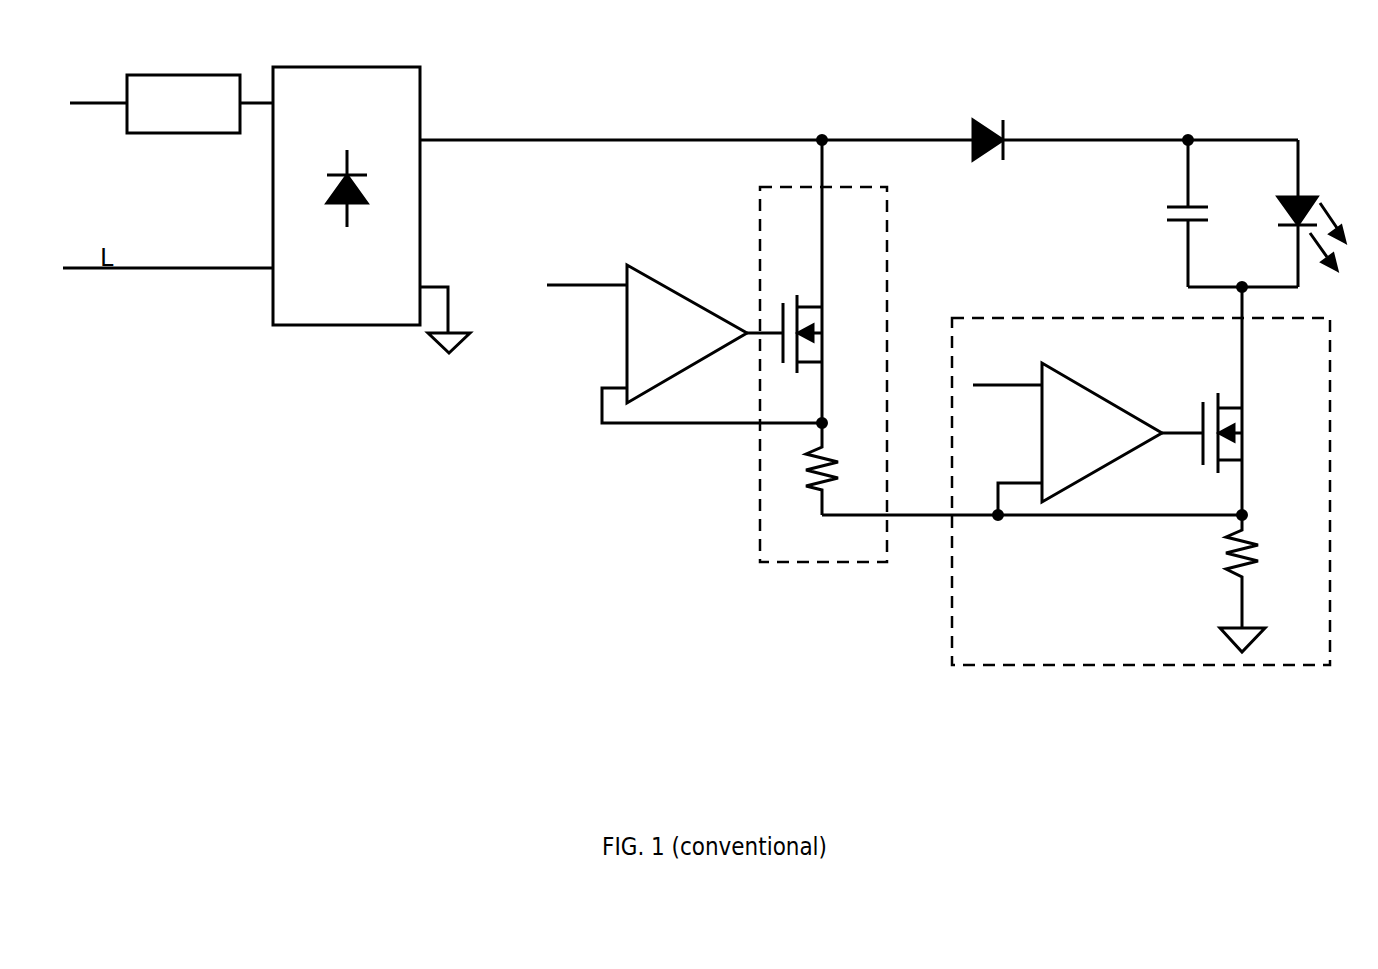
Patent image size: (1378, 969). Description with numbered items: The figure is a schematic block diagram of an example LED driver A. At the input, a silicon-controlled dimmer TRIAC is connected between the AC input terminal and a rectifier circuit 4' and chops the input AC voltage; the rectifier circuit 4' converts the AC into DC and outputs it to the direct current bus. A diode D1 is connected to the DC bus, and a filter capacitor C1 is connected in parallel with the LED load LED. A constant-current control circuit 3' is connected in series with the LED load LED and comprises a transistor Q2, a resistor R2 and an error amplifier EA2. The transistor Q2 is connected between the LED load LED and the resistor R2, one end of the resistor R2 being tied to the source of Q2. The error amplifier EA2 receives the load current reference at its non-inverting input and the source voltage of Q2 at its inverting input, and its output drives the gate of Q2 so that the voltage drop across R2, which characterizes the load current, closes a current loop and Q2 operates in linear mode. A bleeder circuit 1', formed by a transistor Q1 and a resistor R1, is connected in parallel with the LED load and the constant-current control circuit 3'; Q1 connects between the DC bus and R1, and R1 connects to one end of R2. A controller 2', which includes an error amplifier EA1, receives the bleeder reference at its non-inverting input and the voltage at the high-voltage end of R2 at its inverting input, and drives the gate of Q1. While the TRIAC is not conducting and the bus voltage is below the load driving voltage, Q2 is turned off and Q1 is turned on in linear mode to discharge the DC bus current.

The rectifier circuit 4' is at (389, 197).
The controller 2' is at (674, 312).
The bleeder circuit 1' is at (773, 351).
The constant-current control circuit 3' is at (1089, 476).
The LED driver A is at (490, 475).
The silicon-controlled dimmer TRIAC is at (171, 104).
The error amplifier EA1 is at (692, 300).
The transistor Q1 is at (828, 281).
The resistor R1 is at (841, 469).
The error amplifier EA2 is at (1086, 435).
The transistor Q2 is at (1248, 401).
The resistor R2 is at (1255, 583).
The diode D1 is at (988, 157).
The filter capacitor C1 is at (1165, 213).
The LED load LED is at (1311, 213).